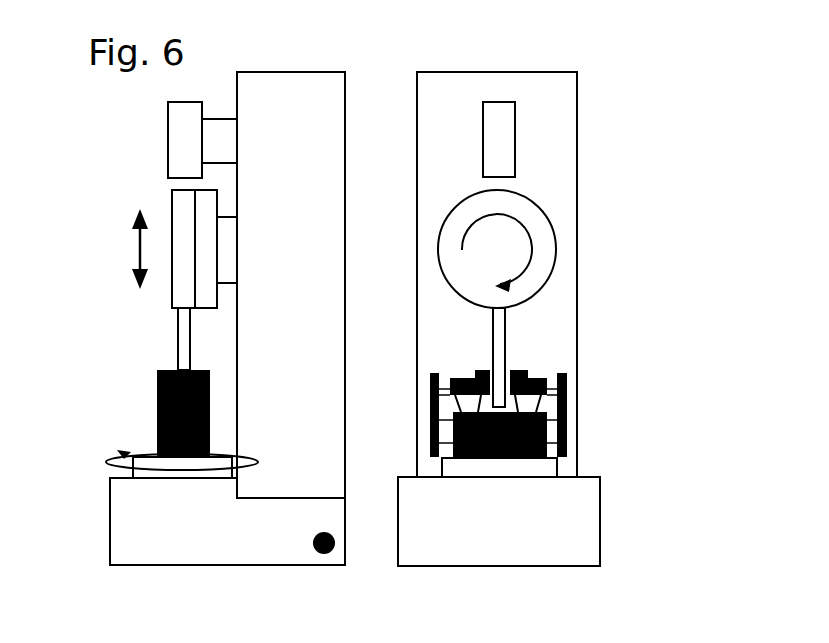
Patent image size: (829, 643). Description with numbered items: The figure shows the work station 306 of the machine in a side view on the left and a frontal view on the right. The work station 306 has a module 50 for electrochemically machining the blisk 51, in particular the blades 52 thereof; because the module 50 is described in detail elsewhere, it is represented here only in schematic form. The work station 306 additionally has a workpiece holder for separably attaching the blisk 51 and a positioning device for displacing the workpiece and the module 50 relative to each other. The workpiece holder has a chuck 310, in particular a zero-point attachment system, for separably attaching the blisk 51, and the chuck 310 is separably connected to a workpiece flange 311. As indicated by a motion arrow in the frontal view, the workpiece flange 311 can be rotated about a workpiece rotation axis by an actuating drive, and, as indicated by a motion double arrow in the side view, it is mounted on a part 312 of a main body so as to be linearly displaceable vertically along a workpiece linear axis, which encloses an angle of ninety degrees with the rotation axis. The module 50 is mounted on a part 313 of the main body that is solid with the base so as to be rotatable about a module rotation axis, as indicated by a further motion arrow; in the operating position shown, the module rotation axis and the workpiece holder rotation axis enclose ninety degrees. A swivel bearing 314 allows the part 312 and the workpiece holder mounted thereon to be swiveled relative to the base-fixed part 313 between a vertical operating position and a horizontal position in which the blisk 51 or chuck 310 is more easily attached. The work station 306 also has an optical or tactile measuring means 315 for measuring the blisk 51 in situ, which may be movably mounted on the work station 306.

The work station 306 is at (659, 101).
The part of the main body 312 is at (330, 491).
The part of the main body solid with the base 313 is at (234, 543).
The swivel bearing 314 is at (335, 549).
The measuring means 315 is at (177, 127).
The blisk 51 is at (178, 200).
The chuck 310 is at (208, 205).
The workpiece flange 311 is at (230, 238).
The blades 52 is at (183, 328).
The module 50 is at (143, 390).